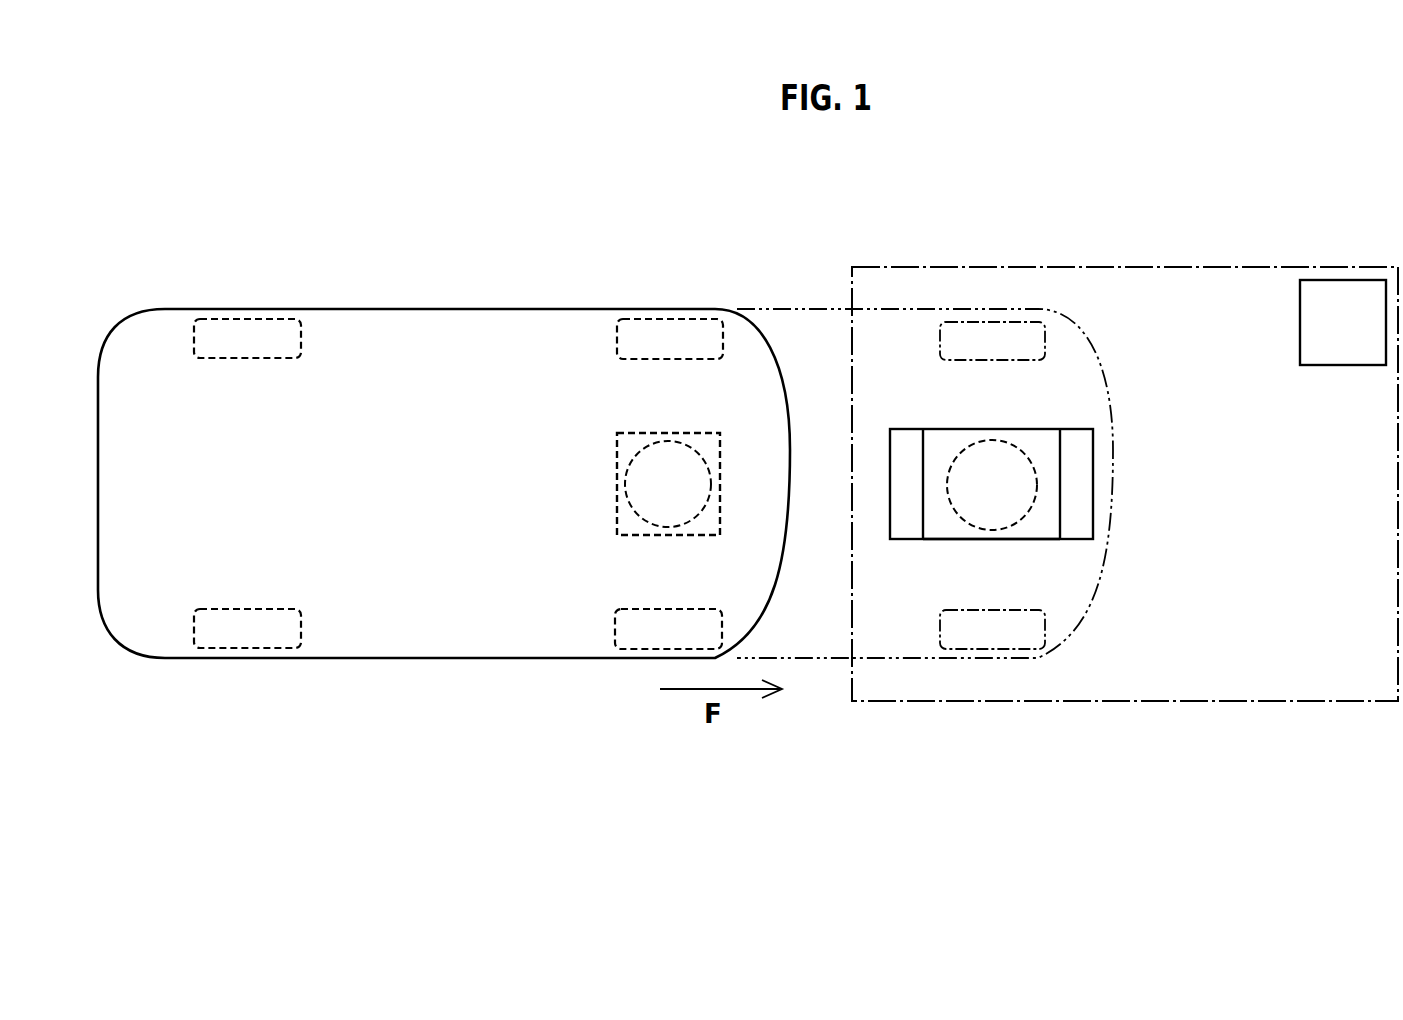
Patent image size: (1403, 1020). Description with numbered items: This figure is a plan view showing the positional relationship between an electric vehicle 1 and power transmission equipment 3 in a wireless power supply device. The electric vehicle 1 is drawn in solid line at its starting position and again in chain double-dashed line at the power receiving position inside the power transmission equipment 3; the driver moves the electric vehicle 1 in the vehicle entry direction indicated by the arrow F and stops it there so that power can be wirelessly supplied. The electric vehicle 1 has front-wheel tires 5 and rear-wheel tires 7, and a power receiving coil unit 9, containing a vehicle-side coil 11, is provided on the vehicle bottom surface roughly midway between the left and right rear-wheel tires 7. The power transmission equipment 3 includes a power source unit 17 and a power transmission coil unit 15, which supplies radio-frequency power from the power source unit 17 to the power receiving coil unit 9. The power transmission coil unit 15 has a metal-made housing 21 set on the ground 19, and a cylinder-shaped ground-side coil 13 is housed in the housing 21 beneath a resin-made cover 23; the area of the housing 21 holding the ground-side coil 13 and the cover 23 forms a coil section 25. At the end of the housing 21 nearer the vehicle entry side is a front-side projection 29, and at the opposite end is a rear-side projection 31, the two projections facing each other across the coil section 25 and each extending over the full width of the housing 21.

The electric vehicle 1 is at (463, 309).
The power transmission equipment 3 is at (1160, 267).
The front-wheel tires 5 is at (243, 319).
The rear-wheel tires 7 is at (660, 319).
The power receiving coil unit 9 is at (612, 445).
The vehicle-side coil 11 is at (625, 497).
The ground-side coil 13 is at (1003, 530).
The power transmission coil unit 15 is at (1040, 548).
The power source unit 17 is at (1341, 280).
The ground 19 is at (1208, 541).
The housing 21 is at (1045, 430).
The cover 23 is at (978, 541).
The coil section 25 is at (1128, 748).
The front-side projection 29 is at (908, 530).
The rear-side projection 31 is at (1080, 473).